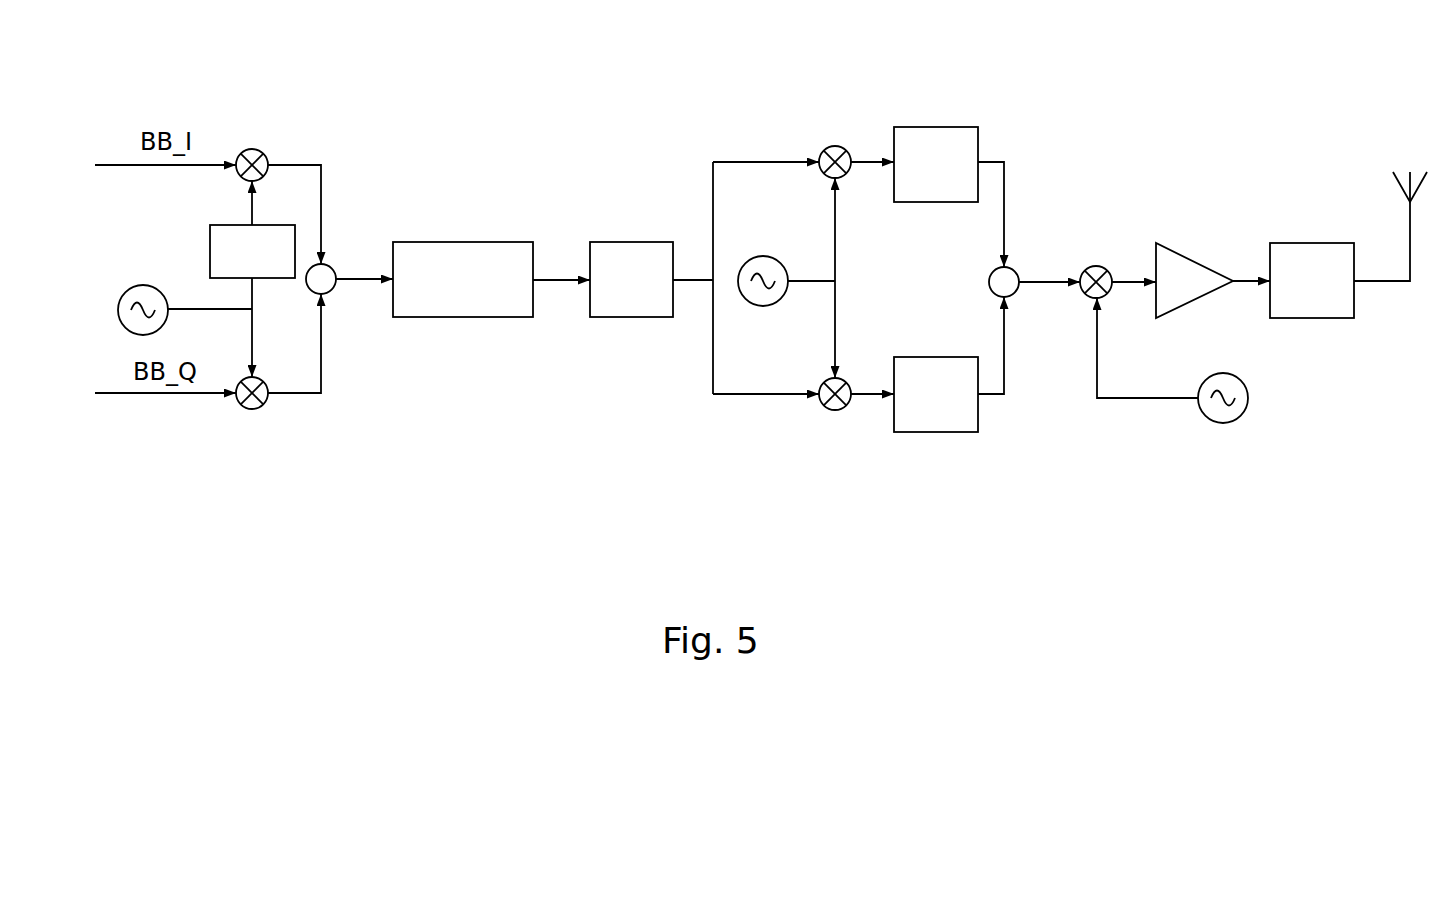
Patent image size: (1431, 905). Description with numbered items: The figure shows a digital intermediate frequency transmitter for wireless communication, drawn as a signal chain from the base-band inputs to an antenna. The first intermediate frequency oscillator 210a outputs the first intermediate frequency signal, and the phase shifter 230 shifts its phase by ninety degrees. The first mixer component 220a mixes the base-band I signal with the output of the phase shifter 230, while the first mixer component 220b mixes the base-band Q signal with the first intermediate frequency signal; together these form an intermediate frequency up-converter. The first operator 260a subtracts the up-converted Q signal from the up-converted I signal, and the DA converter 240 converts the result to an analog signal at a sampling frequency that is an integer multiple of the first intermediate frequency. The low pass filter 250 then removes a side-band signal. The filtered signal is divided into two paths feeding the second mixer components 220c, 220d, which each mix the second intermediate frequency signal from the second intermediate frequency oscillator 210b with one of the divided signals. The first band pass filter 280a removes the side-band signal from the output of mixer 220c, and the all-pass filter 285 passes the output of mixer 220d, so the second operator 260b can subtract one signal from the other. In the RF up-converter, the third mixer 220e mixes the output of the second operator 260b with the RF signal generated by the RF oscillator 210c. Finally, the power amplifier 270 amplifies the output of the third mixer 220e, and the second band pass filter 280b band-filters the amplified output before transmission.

The first intermediate frequency oscillator 210a is at (120, 304).
The second intermediate frequency oscillator 210b is at (790, 294).
The RF oscillator 210c is at (1240, 415).
The first mixer component 220a is at (262, 152).
The first mixer component 220b is at (262, 405).
The second mixer component 220c is at (845, 150).
The second mixer component 220d is at (847, 406).
The third mixer 220e is at (1103, 266).
The phase shifter 230 is at (282, 280).
The DA converter 240 is at (460, 242).
The low pass filter 250 is at (627, 242).
The first operator 260a is at (335, 287).
The second operator 260b is at (1018, 292).
The power amplifier 270 is at (1180, 252).
The first band pass filter 280a is at (935, 127).
The second band pass filter 280b is at (1292, 243).
The all-pass filter 285 is at (950, 432).